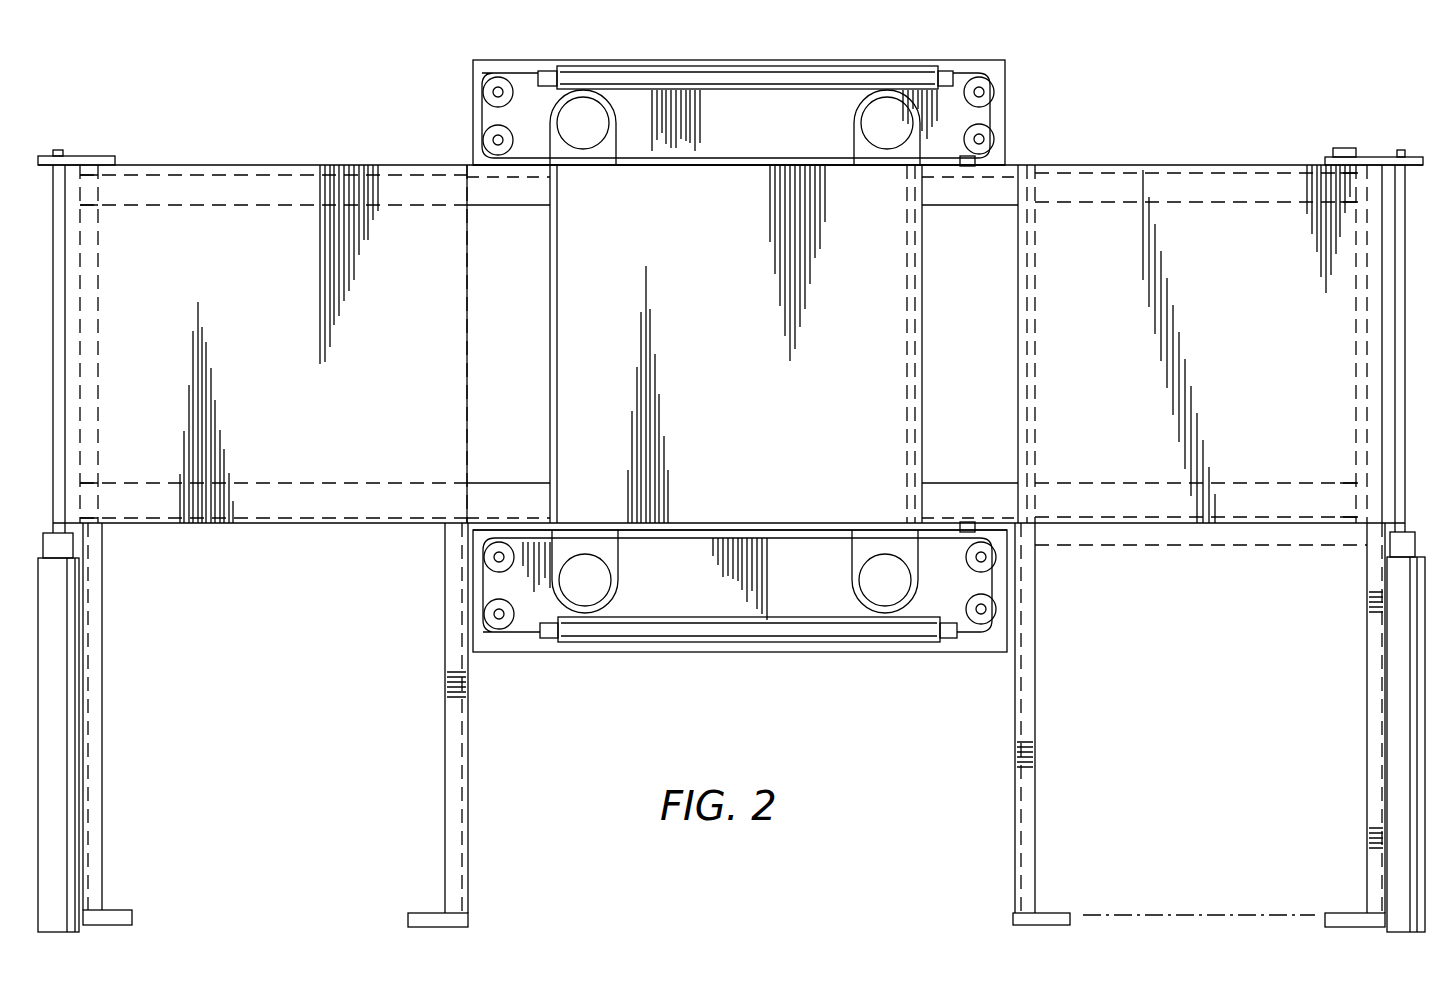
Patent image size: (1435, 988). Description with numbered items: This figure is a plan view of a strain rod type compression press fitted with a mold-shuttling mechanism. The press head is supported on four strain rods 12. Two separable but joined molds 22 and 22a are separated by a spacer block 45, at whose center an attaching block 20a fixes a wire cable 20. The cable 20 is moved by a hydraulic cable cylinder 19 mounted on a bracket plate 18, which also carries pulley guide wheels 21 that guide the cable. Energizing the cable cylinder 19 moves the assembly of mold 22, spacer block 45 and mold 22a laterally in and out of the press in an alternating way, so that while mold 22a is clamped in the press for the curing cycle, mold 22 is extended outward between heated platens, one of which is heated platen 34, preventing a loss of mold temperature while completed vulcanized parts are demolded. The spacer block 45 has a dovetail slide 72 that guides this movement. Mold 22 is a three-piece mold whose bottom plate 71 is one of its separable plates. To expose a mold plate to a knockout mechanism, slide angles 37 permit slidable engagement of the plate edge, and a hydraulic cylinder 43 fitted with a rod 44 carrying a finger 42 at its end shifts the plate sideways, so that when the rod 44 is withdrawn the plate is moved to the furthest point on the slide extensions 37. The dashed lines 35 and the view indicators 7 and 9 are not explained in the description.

The section line 7- 7 is at (885, 425).
The section line 9- 9 is at (970, 407).
The strain rod 12 is at (600, 133).
The bracket plate 18 is at (992, 62).
The hydraulic cable cylinder 19 is at (802, 72).
The wire cable 20 is at (750, 167).
The attaching block 20a is at (968, 168).
The pulley guide wheel 21 is at (490, 140).
The mold 22 is at (1200, 344).
The mold 22a is at (736, 344).
The heated platen 34 is at (730, 344).
The panel edge member 35 is at (268, 205).
The slide angle 37 is at (95, 651).
The finger 42 is at (108, 156).
The hydraulic cylinder 43 is at (65, 720).
The rod 44 is at (60, 368).
The spacer block 45 is at (970, 347).
The bottom plate 71 is at (1192, 915).
The dovetail slide 72 is at (905, 263).